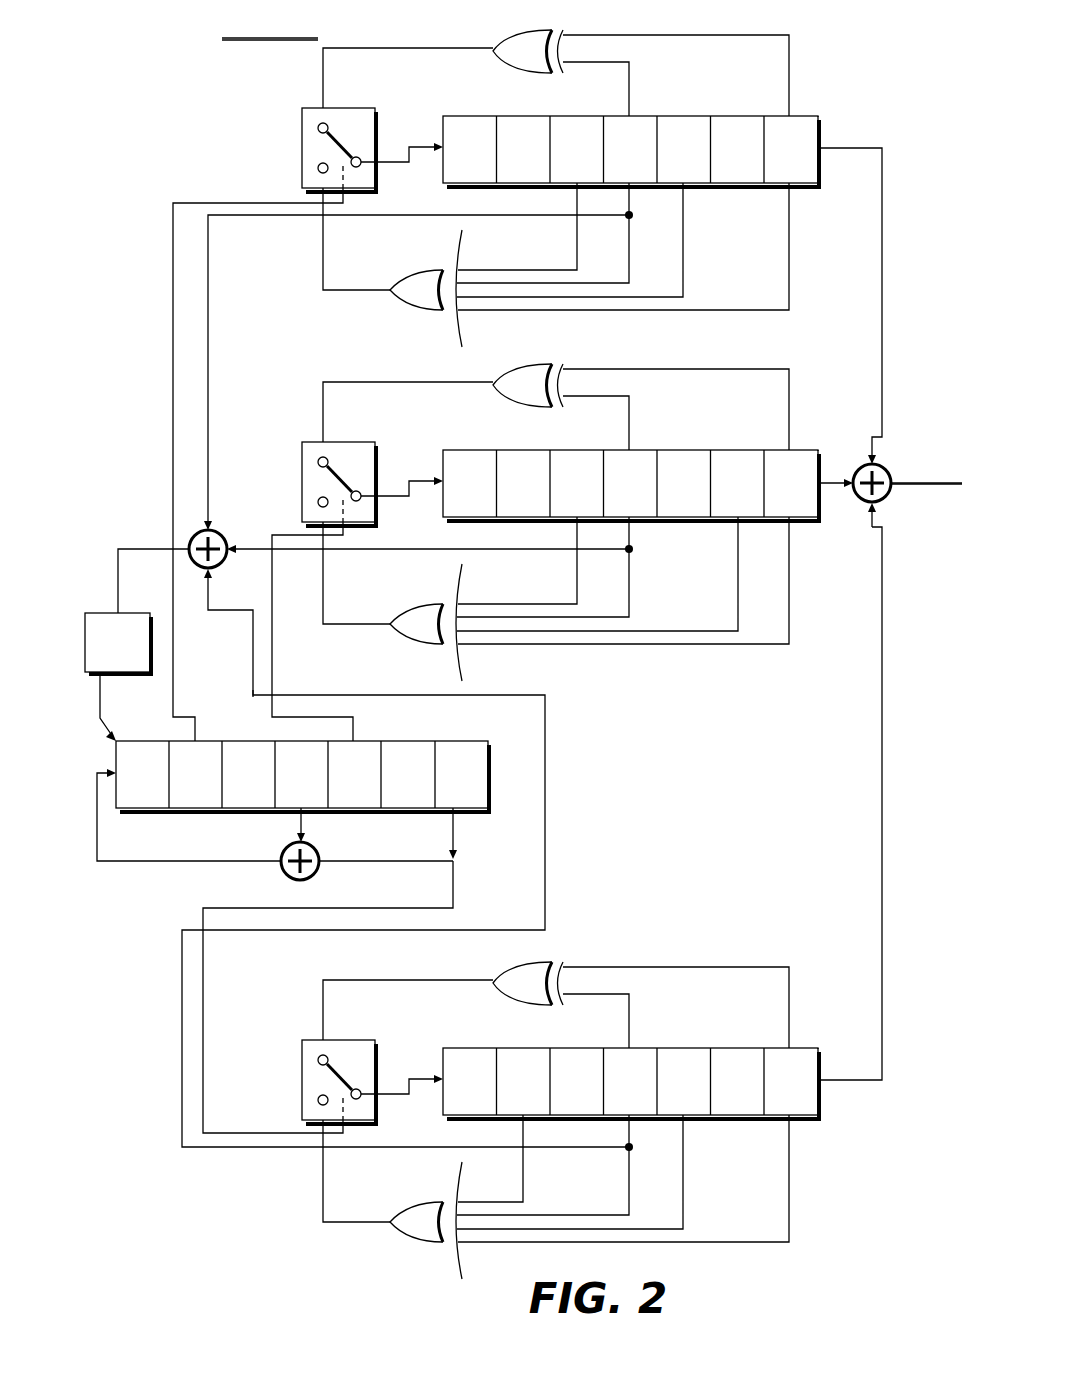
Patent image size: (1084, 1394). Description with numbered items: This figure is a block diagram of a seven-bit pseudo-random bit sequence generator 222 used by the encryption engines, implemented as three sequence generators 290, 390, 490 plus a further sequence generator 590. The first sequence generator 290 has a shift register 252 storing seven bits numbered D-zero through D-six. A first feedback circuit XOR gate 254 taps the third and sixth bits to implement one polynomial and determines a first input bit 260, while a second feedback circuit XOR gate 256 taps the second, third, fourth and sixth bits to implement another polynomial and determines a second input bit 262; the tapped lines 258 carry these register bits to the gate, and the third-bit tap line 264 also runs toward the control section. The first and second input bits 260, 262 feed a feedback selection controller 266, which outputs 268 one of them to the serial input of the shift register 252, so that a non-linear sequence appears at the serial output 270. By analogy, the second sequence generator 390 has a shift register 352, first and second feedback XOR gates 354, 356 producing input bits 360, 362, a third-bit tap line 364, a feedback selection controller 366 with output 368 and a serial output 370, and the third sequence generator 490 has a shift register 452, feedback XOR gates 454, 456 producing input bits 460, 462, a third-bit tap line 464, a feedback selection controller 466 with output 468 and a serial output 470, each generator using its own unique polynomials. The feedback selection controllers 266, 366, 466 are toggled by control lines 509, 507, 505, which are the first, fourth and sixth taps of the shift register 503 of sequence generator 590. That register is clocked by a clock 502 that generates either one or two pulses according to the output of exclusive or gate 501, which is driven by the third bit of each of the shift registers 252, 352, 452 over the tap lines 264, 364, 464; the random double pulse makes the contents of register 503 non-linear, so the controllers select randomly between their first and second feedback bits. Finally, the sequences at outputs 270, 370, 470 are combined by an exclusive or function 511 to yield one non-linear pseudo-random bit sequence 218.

The pseudo-random bit sequence generator 222 is at (270, 26).
The shift register 252 is at (745, 116).
The first feedback circuit XOR gate 254 is at (505, 72).
The second feedback circuit XOR gate 256 is at (418, 312).
The register tap lines 258 is at (402, 243).
The first input bit 260 is at (416, 48).
The second input bit 262 is at (323, 245).
The tap line to adder 264 is at (440, 215).
The feedback selection controller 266 is at (302, 135).
The output of feedback selection controller 268 is at (410, 146).
The serial output 270 is at (852, 148).
The first sequence generator 290 is at (818, 98).
The shift register 352 is at (745, 450).
The first feedback circuit XOR gate 354 is at (512, 408).
The second feedback circuit XOR gate 356 is at (418, 647).
The first input bit 360 is at (412, 384).
The second input bit 362 is at (323, 579).
The tap line to adder 364 is at (440, 549).
The feedback selection controller 366 is at (302, 469).
The output of feedback selection controller 368 is at (410, 480).
The serial output 370 is at (826, 480).
The second sequence generator 390 is at (820, 432).
The non-linear pseudo-random bit sequence 218 is at (939, 470).
The shift register 452 is at (745, 1048).
The first feedback circuit XOR gate 454 is at (500, 1006).
The second feedback circuit XOR gate 456 is at (418, 1244).
The first input bit 460 is at (412, 981).
The second input bit 462 is at (323, 1177).
The tap line 464 is at (440, 1147).
The feedback selection controller 466 is at (302, 1067).
The output of feedback selection controller 468 is at (410, 1078).
The serial output 470 is at (830, 1080).
The third sequence generator 490 is at (820, 1030).
The exclusive or gate 501 is at (223, 562).
The clock 502 is at (120, 616).
The shift register 503 is at (205, 741).
The control line 505 is at (455, 892).
The control line 507 is at (297, 535).
The control line 509 is at (185, 203).
The exclusive or function 511 is at (858, 512).
The sequence generator 590 is at (199, 672).